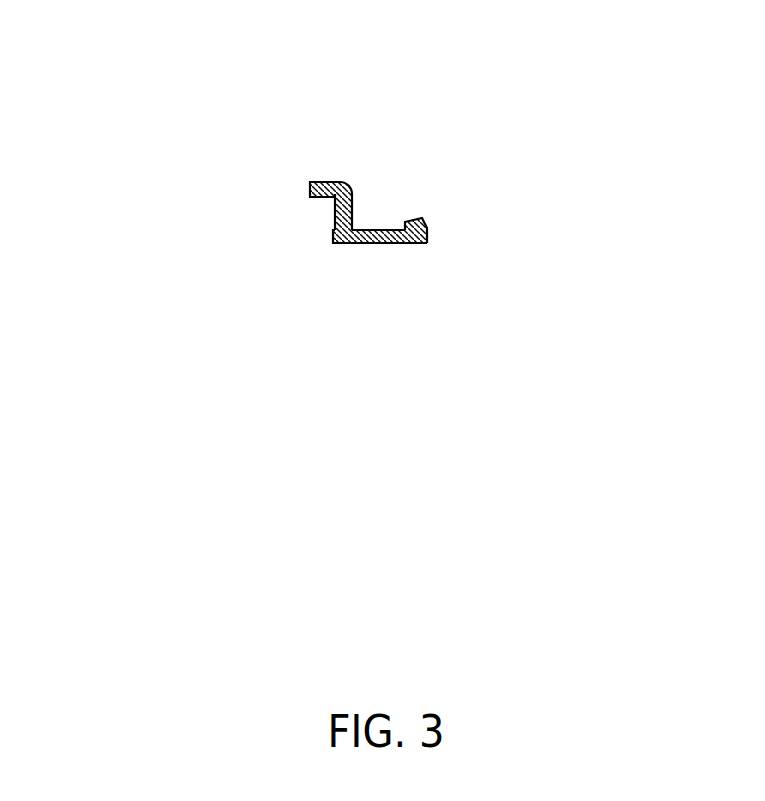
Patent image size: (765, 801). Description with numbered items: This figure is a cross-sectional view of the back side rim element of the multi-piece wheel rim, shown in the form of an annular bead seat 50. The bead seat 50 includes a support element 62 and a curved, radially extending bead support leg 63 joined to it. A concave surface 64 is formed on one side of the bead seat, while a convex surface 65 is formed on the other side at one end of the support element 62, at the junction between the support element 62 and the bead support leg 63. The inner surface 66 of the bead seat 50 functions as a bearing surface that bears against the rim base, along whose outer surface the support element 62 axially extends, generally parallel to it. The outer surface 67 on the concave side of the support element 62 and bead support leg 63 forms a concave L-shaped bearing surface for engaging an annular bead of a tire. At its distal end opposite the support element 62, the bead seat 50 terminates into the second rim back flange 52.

The bead seat 50 is at (455, 196).
The second rim back flange 52 is at (310, 182).
The support element 62 is at (403, 248).
The bead support leg 63 is at (337, 233).
The concave surface 64 is at (354, 229).
The convex surface 65 is at (332, 242).
The inner surface 66 is at (367, 248).
The outer surface 67 is at (400, 218).